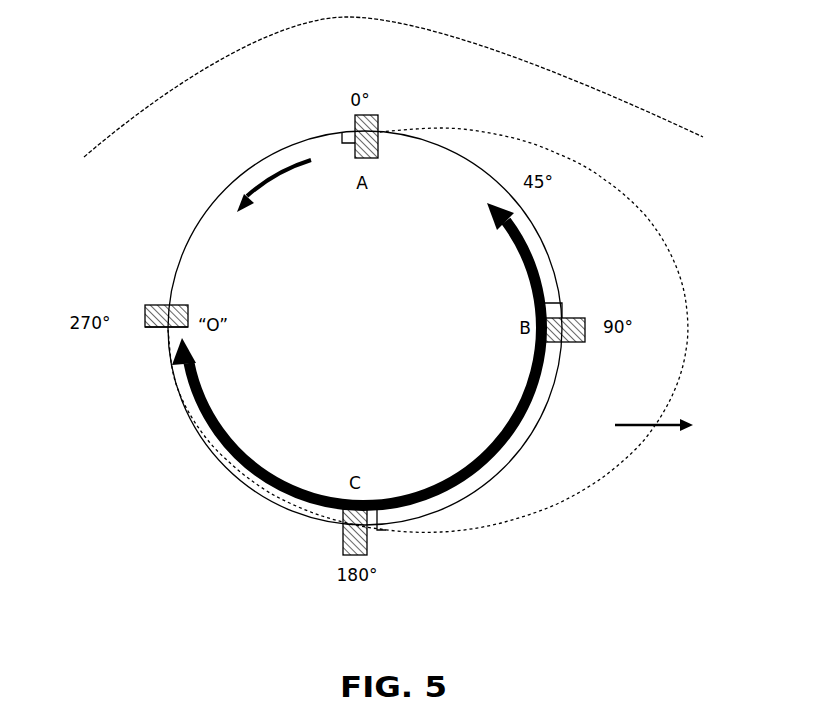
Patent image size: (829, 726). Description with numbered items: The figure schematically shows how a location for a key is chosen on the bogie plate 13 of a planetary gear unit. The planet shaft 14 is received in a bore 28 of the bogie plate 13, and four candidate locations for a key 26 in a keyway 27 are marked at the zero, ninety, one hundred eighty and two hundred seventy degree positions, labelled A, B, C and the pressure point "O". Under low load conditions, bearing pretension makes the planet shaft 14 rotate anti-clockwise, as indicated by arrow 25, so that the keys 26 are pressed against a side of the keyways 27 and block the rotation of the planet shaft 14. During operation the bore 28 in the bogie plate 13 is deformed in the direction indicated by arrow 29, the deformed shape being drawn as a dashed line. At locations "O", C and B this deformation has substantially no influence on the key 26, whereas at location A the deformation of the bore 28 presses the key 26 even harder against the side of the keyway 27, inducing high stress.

The bogie plate 13 is at (190, 103).
The planet shaft 14 is at (188, 240).
The arrow 25 is at (274, 186).
The key 26 is at (150, 303).
The keyway 27 is at (162, 335).
The bore 28 is at (589, 478).
The arrow 29 is at (664, 430).